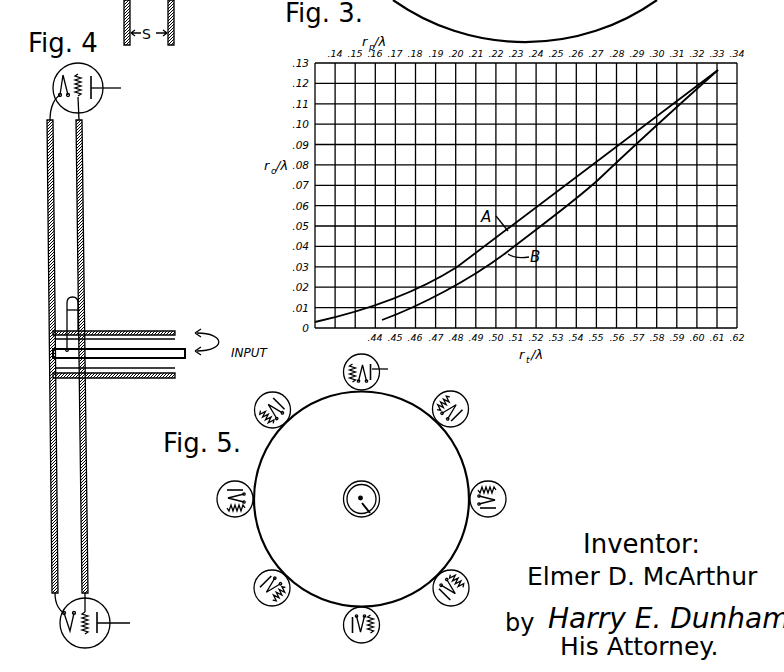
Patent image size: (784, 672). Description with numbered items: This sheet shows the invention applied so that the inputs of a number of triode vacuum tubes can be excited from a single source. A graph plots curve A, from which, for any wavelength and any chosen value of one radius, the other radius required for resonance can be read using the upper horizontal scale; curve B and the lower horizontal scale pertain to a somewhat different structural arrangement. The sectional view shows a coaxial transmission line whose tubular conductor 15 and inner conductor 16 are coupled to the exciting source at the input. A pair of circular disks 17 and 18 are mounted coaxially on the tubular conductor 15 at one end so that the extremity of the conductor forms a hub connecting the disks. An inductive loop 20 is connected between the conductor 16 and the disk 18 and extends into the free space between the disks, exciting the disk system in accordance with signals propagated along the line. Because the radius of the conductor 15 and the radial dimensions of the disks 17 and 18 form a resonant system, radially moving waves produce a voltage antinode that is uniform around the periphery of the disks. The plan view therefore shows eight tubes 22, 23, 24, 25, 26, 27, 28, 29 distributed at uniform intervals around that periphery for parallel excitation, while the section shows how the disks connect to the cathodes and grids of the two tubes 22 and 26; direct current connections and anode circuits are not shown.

In FIG. 4, the tubular conductor 15 is at (141, 331).
In FIG. 5, the tubular conductor 15 is at (380, 493).
In FIG. 4, the conductor 16 is at (160, 349).
In FIG. 5, the conductor 16 is at (370, 513).
In FIG. 4, the circular disk 17 is at (48, 167).
In FIG. 4, the circular disk 18 is at (82, 167).
In FIG. 5, the circular disk 18 is at (467, 466).
In FIG. 4, the inductive loop 20 is at (80, 310).
In FIG. 4, the triode vacuum tube 22 is at (101, 100).
In FIG. 5, the triode vacuum tube 22 is at (378, 380).
In FIG. 5, the triode vacuum tube 23 is at (456, 425).
In FIG. 5, the triode vacuum tube 24 is at (486, 517).
In FIG. 5, the triode vacuum tube 25 is at (437, 600).
In FIG. 4, the triode vacuum tube 26 is at (104, 607).
In FIG. 5, the triode vacuum tube 26 is at (343, 626).
In FIG. 5, the triode vacuum tube 27 is at (258, 580).
In FIG. 5, the triode vacuum tube 28 is at (242, 483).
In FIG. 5, the triode vacuum tube 29 is at (284, 399).